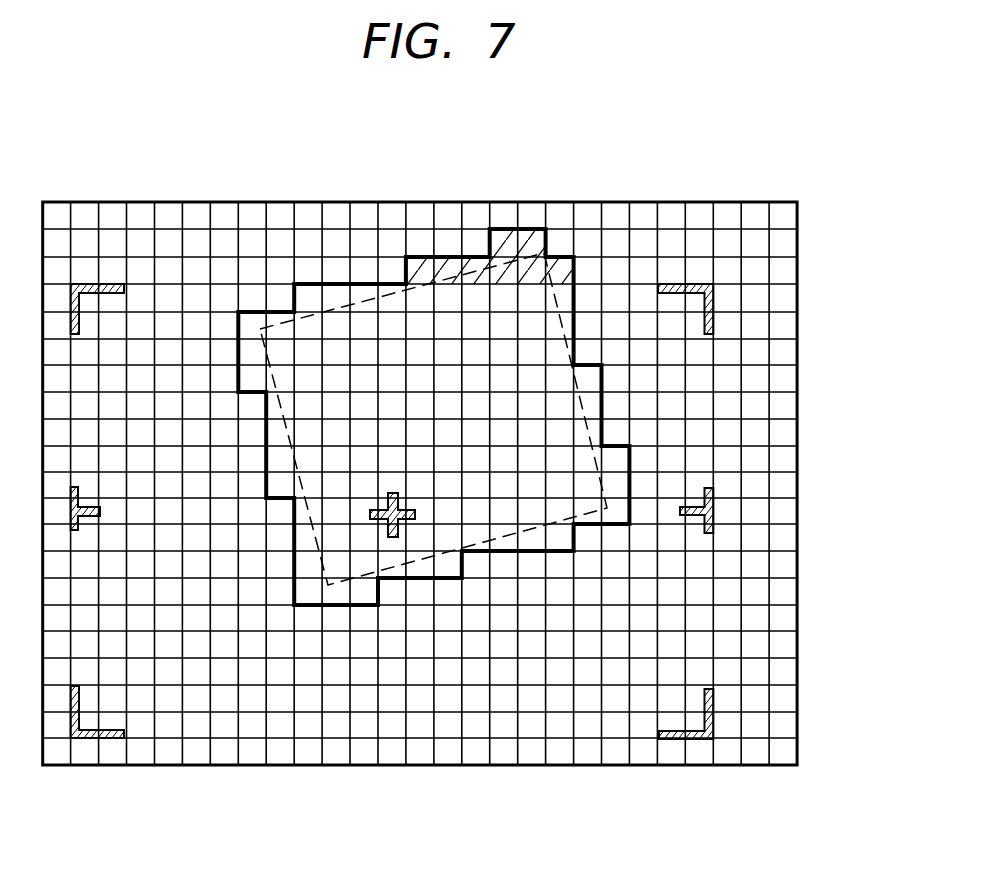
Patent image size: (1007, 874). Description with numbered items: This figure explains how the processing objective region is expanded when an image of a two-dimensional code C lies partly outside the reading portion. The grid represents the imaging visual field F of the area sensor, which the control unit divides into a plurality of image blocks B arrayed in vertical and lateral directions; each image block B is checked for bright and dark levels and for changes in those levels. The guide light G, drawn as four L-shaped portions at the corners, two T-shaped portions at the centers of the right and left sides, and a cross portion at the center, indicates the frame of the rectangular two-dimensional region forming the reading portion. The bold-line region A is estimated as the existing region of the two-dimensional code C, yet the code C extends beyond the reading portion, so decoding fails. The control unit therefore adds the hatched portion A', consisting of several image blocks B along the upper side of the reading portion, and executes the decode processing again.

The imaging visual field F is at (114, 203).
The image block B is at (783, 378).
The guide light G is at (703, 284).
The region encircled by a bold line A is at (548, 417).
The added portion A' is at (490, 209).
The two-dimensional code C is at (362, 300).